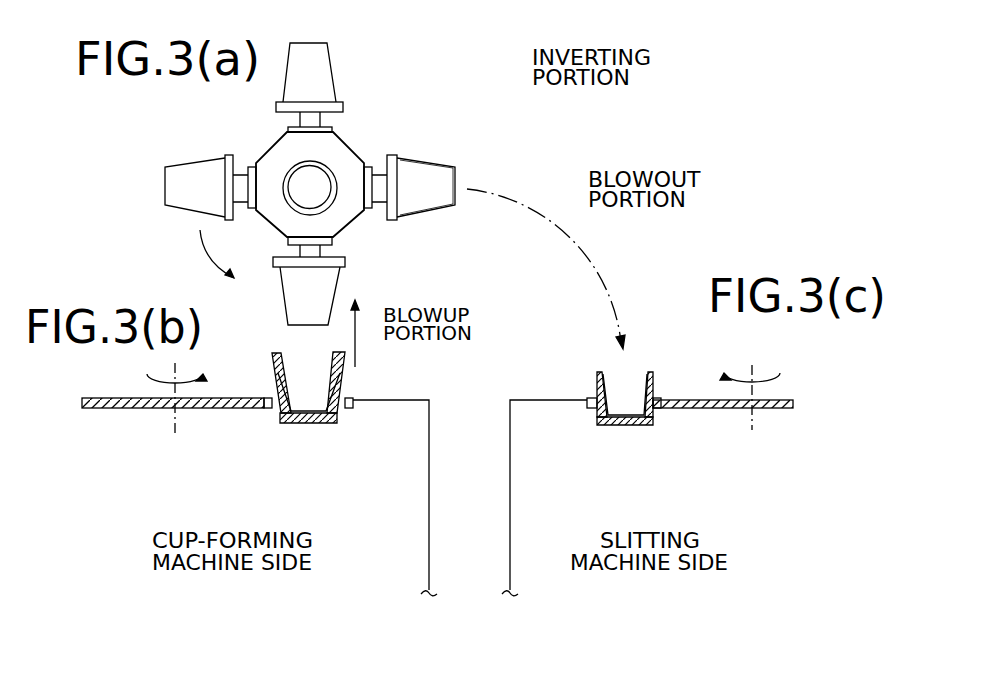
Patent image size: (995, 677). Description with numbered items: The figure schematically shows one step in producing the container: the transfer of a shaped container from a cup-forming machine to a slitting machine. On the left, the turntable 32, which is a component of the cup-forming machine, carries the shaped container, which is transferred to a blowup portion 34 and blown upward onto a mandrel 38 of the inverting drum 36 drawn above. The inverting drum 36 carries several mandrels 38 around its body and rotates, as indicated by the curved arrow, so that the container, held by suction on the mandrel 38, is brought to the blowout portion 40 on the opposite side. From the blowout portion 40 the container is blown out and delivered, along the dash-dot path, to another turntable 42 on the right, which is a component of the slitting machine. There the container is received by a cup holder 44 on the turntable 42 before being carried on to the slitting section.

The turntable 32 is at (117, 412).
The blowup portion 34 is at (337, 387).
The inverting drum 36 is at (347, 143).
The mandrel 38 is at (337, 287).
The blowout portion 40 is at (435, 161).
The turntable 42 is at (723, 410).
The cup holder 44 is at (653, 373).